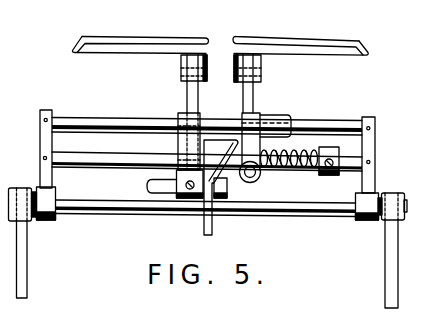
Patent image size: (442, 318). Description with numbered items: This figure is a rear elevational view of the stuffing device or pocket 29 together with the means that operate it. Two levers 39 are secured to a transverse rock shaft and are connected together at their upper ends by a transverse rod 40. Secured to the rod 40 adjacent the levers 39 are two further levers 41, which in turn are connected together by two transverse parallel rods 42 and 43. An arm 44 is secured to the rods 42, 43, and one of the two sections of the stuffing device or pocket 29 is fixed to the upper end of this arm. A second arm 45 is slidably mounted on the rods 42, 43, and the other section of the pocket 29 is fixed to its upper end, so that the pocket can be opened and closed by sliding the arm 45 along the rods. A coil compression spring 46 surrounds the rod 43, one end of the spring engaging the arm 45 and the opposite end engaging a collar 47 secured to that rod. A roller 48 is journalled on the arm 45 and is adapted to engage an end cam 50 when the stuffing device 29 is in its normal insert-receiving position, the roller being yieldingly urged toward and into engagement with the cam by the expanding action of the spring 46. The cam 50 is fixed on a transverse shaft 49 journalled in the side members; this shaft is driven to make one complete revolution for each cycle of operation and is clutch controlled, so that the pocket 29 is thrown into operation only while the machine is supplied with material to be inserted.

The stuffing device or pocket 29 is at (146, 20).
The levers 39 is at (20, 271).
The transverse rod 40 is at (87, 213).
The levers 41 is at (41, 135).
The transverse rod 42 is at (87, 118).
The transverse rod 43 is at (88, 153).
The arm 44 is at (190, 88).
The second arm 45 is at (247, 97).
The coil compression spring 46 is at (271, 168).
The collar 47 is at (331, 147).
The roller 48 is at (259, 181).
The transverse shaft 49 is at (150, 183).
The end cam 50 is at (203, 225).